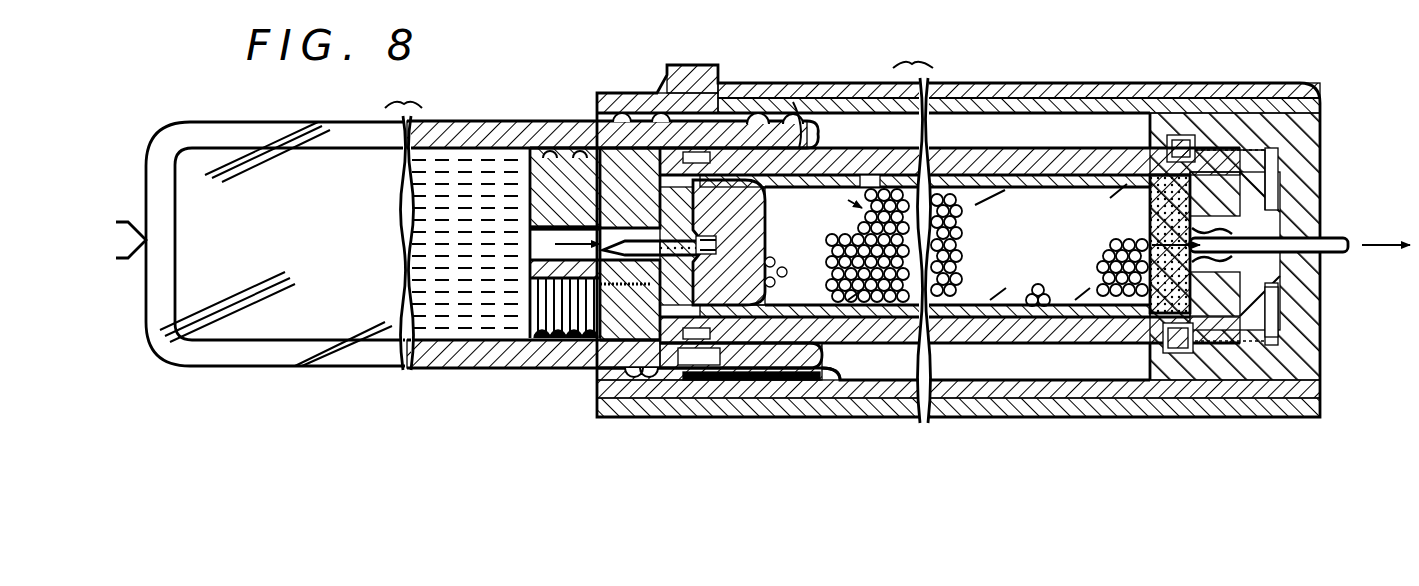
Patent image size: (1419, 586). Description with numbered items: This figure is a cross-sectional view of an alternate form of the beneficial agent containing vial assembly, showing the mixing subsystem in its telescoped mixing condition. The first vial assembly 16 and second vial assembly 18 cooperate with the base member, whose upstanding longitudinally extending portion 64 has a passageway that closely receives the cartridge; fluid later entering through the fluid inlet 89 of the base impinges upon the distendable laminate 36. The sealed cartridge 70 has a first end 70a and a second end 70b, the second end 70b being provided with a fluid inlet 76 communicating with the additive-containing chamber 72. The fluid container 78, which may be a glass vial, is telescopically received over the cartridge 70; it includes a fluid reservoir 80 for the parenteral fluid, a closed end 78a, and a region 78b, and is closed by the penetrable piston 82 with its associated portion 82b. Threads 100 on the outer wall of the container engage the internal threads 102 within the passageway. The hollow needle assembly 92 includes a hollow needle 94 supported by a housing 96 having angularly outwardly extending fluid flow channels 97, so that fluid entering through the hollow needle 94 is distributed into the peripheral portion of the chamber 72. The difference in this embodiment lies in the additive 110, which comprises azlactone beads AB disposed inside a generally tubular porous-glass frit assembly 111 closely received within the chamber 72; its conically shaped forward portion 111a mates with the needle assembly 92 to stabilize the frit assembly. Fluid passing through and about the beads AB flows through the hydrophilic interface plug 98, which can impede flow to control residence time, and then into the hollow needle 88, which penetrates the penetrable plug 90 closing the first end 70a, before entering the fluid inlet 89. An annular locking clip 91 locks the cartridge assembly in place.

The first vial assembly 16 is at (268, 375).
The second vial assembly 18 is at (1100, 140).
The distendable laminate 36 is at (1282, 80).
The upstanding longitudinally extending portion 64 is at (1040, 105).
The sealed cartridge 70 is at (968, 140).
The first end of cartridge 70a is at (1280, 165).
The second end of cartridge 70b is at (607, 383).
The additive-containing chamber 72 is at (1020, 188).
The fluid inlet 76 is at (764, 244).
The fluid container 78 is at (408, 208).
The closed end of container 78a is at (178, 197).
The tube end 78b is at (832, 370).
The fluid reservoir 80 is at (455, 158).
The penetrable piston 82 is at (570, 345).
The plunger rod 82b is at (530, 238).
The hollow needle 88 is at (1336, 254).
The fluid inlet of base 89 is at (1350, 247).
The penetrable plug 90 is at (1272, 325).
The locking clip 91 is at (1184, 356).
The hollow needle assembly 92 is at (755, 205).
The hollow needle 94 is at (645, 240).
The housing 96 is at (678, 290).
The fluid flow channels 97 is at (780, 278).
The hydrophilic interface plug 98 is at (1148, 212).
The threads 100 is at (800, 335).
The internal threads 102 is at (617, 100).
The additive 110 is at (875, 220).
The porous-glass frit assembly 111 is at (1018, 322).
The conically shaped forward portion 111a is at (741, 355).
The azlactone beads AB is at (1098, 253).